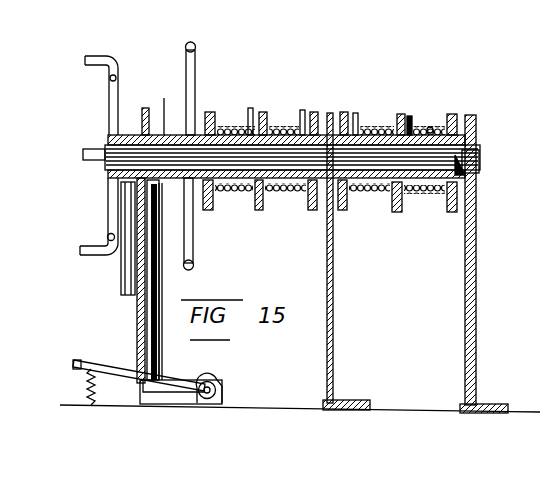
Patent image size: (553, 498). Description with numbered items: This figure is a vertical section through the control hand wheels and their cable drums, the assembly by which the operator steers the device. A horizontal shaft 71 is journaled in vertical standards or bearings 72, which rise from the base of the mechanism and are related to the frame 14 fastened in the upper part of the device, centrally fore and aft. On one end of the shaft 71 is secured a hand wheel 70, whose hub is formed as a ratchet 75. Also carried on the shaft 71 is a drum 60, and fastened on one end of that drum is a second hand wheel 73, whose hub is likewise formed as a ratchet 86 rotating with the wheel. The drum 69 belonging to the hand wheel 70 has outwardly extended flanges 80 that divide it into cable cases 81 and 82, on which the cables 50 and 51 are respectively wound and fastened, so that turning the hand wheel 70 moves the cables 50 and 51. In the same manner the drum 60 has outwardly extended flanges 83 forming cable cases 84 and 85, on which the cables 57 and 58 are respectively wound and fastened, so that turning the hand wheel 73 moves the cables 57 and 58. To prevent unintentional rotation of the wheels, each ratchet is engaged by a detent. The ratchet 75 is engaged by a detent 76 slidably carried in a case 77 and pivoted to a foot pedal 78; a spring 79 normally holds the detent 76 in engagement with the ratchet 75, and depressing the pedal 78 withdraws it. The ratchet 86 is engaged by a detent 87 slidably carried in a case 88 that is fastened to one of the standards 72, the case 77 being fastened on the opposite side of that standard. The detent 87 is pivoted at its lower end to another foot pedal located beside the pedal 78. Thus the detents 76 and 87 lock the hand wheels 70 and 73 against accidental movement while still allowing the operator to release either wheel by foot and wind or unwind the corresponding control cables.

The frame 14 is at (42, 317).
The cable 50 is at (362, 114).
The cable 51 is at (411, 116).
The cable 57 is at (250, 110).
The cable 58 is at (301, 112).
The drum 60 is at (234, 123).
The drum 69 is at (431, 128).
The hand wheel 70 is at (110, 75).
The shaft 71 is at (480, 160).
The vertical standards 72 is at (330, 112).
The hand wheel 73 is at (196, 55).
The ratchet 75 is at (130, 130).
The detent 76 is at (136, 316).
The case 77 is at (125, 280).
The foot pedal 78 is at (73, 365).
The spring 79 is at (88, 386).
The flanges 80 is at (453, 112).
The cable case 81 is at (391, 197).
The cable case 82 is at (446, 199).
The flanges 83 is at (312, 110).
The cable case 84 is at (213, 199).
The cable case 85 is at (307, 197).
The ratchet 86 is at (164, 125).
The detent 87 is at (153, 338).
The case 88 is at (162, 300).